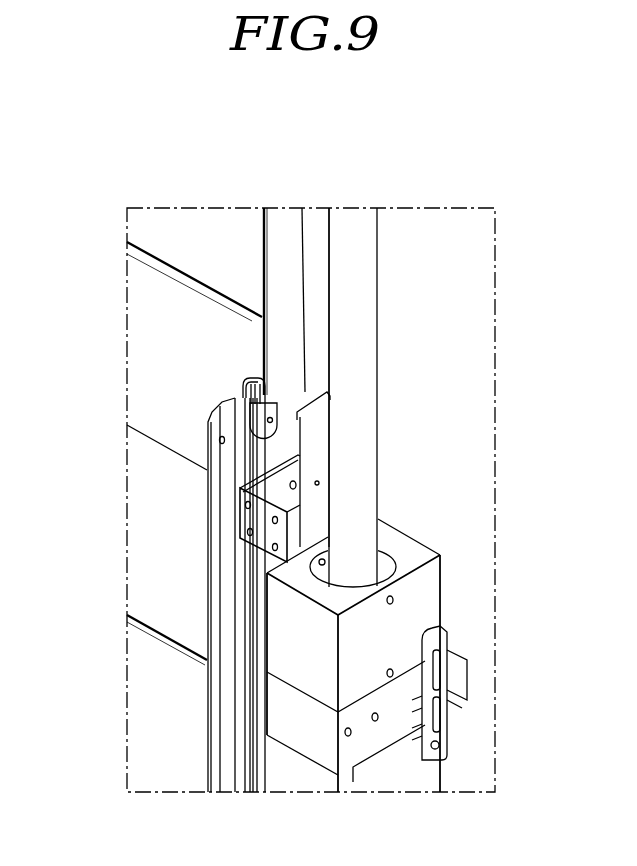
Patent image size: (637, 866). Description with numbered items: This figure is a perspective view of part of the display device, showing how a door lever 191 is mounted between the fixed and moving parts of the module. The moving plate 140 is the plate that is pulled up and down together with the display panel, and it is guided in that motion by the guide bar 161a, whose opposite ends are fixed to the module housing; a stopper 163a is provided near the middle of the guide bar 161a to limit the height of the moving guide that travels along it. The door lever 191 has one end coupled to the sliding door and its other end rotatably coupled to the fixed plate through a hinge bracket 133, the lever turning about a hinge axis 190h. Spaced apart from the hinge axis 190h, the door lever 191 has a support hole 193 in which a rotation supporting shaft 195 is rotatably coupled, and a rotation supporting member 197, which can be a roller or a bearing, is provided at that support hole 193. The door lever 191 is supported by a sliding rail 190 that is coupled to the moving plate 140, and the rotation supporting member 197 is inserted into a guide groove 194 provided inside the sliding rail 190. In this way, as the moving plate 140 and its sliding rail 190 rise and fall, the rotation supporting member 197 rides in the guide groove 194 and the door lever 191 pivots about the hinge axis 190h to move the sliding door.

The hinge bracket 133 is at (265, 483).
The moving plate 140 is at (147, 400).
The guide bar 161a is at (358, 458).
The stopper 163a is at (423, 603).
The sliding rail 190 is at (227, 592).
The hinge axis 190h is at (297, 487).
The door lever 191 is at (288, 230).
The support hole 193 is at (275, 423).
The guide groove 194 is at (257, 378).
The rotation supporting shaft 195 is at (267, 392).
The rotation supporting member 197 is at (247, 386).